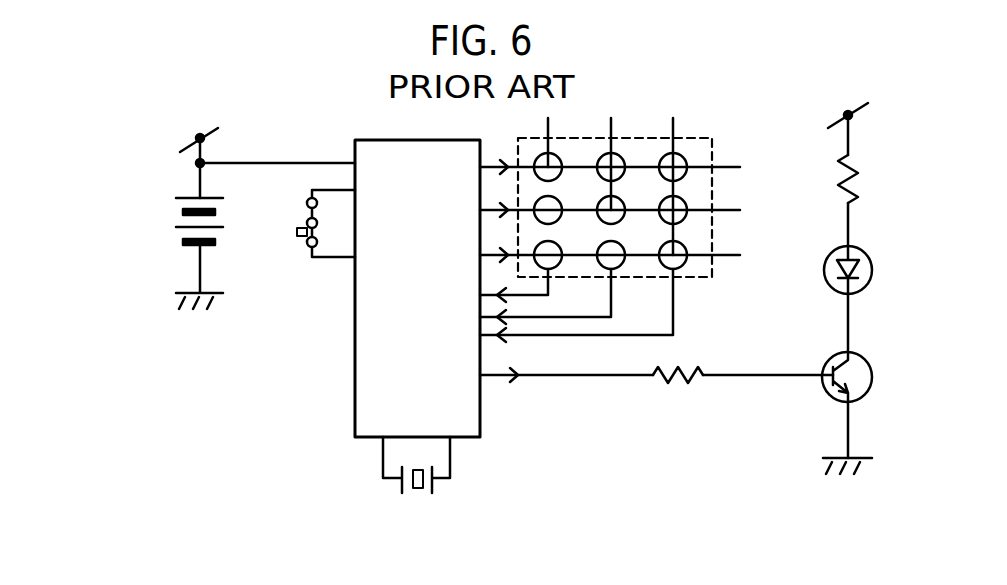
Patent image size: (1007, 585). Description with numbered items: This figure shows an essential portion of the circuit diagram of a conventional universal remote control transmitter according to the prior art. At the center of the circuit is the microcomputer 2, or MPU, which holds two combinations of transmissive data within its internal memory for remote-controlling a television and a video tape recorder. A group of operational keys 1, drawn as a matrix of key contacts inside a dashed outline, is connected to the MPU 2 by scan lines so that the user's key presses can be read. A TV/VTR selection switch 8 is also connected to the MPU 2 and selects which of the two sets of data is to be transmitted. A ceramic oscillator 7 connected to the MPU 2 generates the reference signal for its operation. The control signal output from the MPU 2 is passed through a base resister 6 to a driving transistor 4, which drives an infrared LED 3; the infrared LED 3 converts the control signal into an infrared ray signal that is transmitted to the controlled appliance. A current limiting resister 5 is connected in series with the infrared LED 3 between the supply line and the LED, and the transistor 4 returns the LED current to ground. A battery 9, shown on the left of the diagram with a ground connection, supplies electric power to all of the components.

The group of operational keys 1 is at (648, 132).
The microcomputer 2 is at (398, 330).
The infrared LED 3 is at (827, 280).
The driving transistor 4 is at (825, 392).
The current limiting resister 5 is at (837, 190).
The base resister 6 is at (675, 385).
The ceramic oscillator 7 is at (417, 493).
The TV/VTR selection switch 8 is at (297, 208).
The battery 9 is at (182, 212).